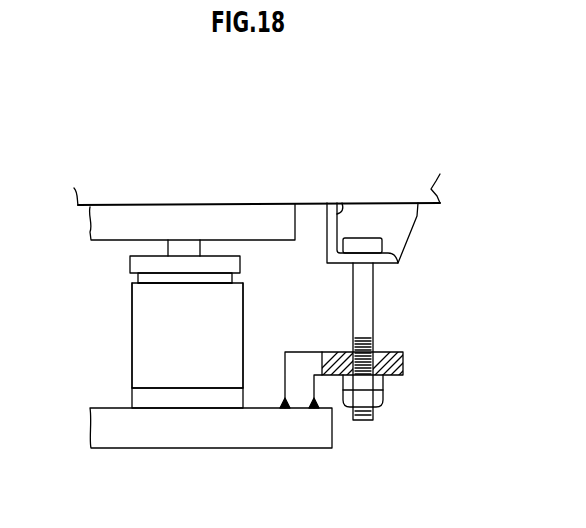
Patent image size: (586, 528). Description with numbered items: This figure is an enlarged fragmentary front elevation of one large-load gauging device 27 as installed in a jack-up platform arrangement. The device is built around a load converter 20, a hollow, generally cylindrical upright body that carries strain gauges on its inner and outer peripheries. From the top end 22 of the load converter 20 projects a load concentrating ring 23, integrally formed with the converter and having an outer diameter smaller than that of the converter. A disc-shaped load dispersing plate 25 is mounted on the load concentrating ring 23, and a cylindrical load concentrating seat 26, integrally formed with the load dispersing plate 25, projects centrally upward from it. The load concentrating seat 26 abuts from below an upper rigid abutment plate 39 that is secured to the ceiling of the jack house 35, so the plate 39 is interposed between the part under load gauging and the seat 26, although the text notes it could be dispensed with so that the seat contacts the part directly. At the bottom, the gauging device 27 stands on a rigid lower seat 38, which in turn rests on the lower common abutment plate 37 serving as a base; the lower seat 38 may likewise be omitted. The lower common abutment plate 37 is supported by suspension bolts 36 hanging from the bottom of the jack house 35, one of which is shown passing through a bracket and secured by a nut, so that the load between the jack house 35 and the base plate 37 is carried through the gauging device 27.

The upper rigid abutment plate 39 is at (142, 213).
The load concentrating seat 26 is at (192, 245).
The load dispersing plate 25 is at (232, 262).
The load concentrating ring 23 is at (227, 276).
The top end 22 is at (138, 283).
The load converter 20 is at (148, 322).
The large-load gauging device 27 is at (124, 350).
The lower seat 38 is at (195, 395).
The lower common abutment plate 37 is at (290, 433).
The jack house 35 is at (318, 197).
The suspension bolt 36 is at (368, 313).